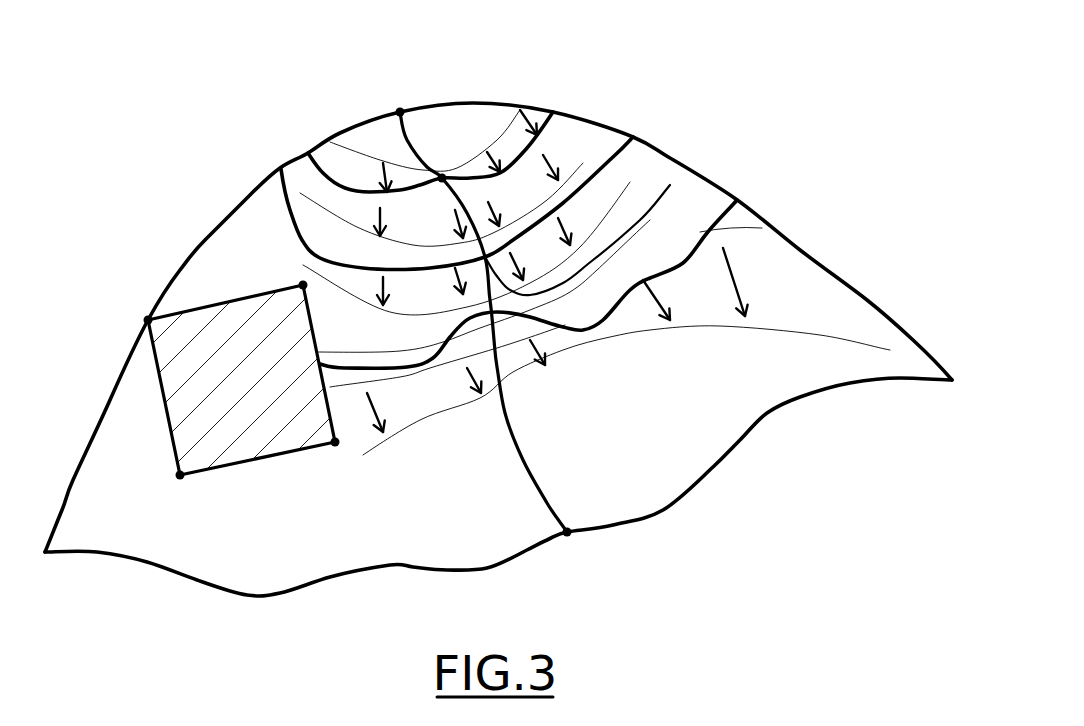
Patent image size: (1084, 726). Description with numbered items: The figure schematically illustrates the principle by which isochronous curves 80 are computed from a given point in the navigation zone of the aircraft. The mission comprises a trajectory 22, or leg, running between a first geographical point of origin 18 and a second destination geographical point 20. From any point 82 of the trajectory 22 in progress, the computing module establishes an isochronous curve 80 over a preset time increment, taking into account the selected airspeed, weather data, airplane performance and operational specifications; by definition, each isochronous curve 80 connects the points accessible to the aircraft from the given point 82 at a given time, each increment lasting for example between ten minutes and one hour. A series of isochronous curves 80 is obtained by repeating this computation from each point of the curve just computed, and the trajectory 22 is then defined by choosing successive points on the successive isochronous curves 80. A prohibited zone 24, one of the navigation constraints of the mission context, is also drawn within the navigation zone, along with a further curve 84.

The first point 18 is at (400, 112).
The second point 20 is at (568, 537).
The reference line 22 is at (523, 460).
The unit cell 24 is at (253, 445).
The curves 80 is at (607, 155).
The intersection point 82 is at (442, 178).
The curve 84 is at (670, 185).